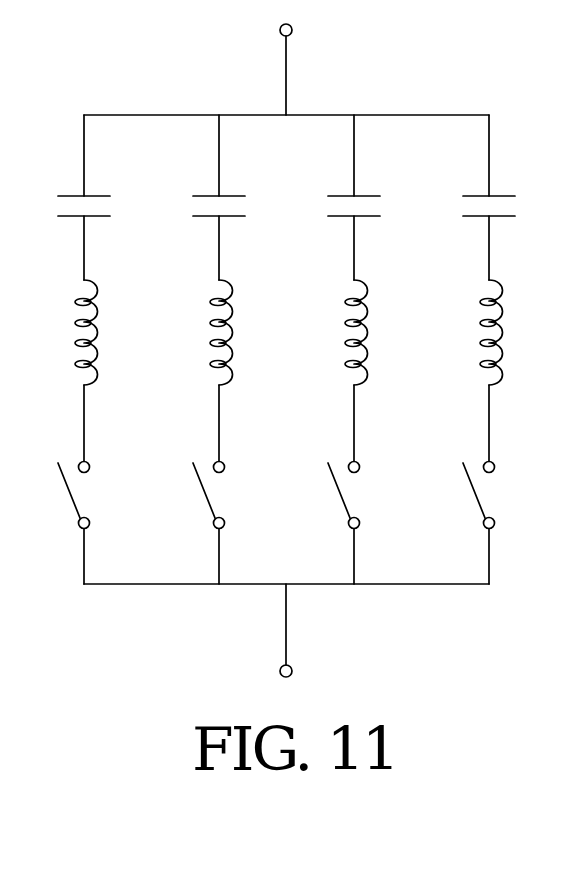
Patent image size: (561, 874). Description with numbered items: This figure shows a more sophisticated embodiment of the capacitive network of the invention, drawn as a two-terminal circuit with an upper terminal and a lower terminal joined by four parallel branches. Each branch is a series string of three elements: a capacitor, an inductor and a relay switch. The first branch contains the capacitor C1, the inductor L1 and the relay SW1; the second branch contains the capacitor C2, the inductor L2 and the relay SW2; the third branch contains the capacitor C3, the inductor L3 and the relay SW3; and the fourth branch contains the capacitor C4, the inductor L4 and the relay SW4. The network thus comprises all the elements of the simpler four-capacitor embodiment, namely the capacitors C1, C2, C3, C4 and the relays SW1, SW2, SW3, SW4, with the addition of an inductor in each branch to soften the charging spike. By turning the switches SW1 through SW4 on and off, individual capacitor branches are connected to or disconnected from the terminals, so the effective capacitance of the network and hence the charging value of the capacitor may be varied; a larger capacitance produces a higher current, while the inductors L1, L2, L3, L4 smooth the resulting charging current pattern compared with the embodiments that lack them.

The capacitor C1 is at (78, 194).
The capacitor C2 is at (213, 194).
The capacitor C3 is at (348, 194).
The capacitor C4 is at (483, 194).
The inductor L1 is at (82, 362).
The inductor L2 is at (217, 362).
The inductor L3 is at (352, 362).
The inductor L4 is at (487, 362).
The relay SW1 is at (64, 457).
The relay SW2 is at (199, 457).
The relay SW3 is at (334, 457).
The relay SW4 is at (469, 457).